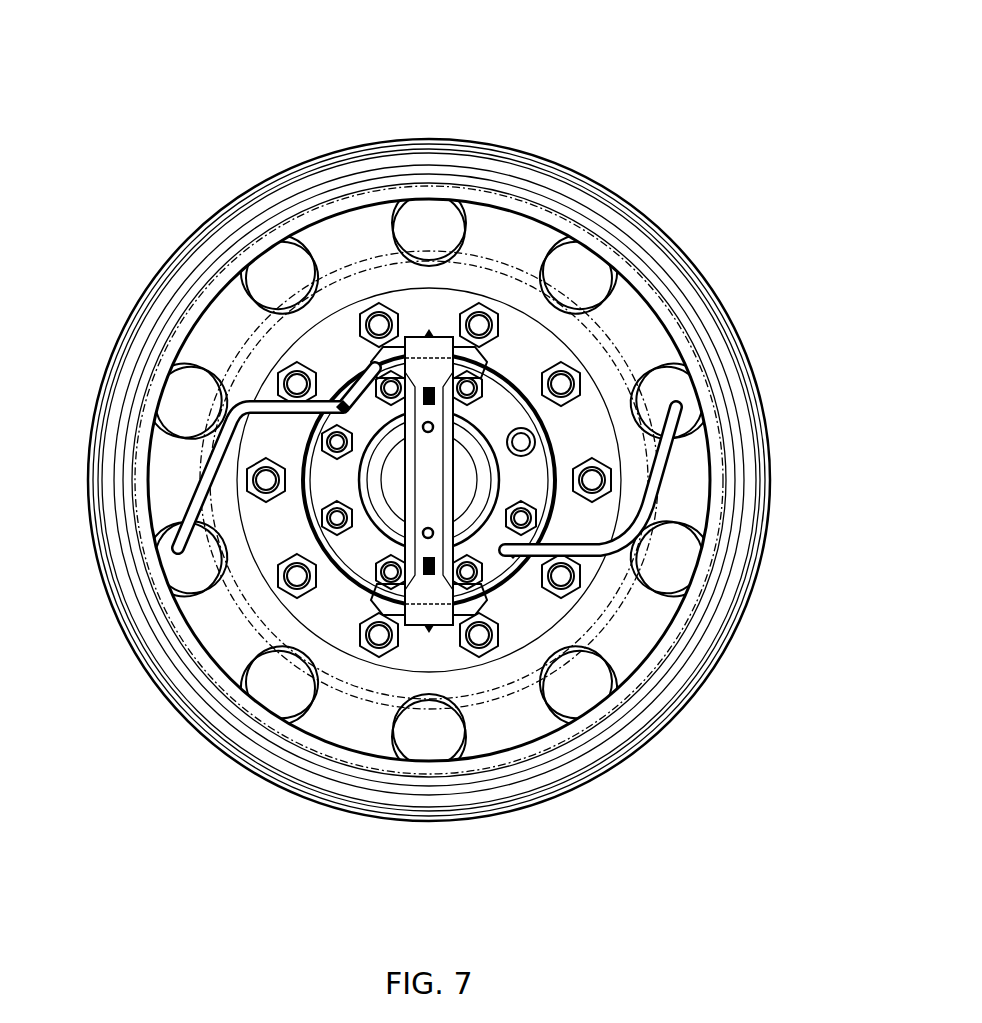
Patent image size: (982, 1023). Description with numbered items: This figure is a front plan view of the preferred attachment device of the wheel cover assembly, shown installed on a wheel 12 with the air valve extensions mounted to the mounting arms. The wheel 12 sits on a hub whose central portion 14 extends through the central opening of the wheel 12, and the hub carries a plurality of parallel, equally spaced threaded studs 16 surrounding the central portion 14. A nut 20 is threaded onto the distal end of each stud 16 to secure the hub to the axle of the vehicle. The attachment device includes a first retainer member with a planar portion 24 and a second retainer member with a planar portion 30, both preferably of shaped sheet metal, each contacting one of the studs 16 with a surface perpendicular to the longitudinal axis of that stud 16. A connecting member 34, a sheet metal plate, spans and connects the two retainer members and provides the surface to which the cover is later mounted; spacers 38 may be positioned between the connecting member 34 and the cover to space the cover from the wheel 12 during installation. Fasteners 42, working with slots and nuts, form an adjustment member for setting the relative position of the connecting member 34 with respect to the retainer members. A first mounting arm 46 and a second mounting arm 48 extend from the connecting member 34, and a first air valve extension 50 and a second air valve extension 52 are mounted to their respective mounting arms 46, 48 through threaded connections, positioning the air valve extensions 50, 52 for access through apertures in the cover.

The wheel 12 is at (572, 167).
The central portion of the hub 14 is at (467, 477).
The threaded stud 16 is at (522, 443).
The nut 20 is at (470, 343).
The planar portion 24 is at (477, 357).
The planar portion 30 is at (393, 598).
The connecting member 34 is at (437, 472).
The spacer 38 is at (428, 387).
The fastener 42 is at (429, 336).
The first mounting arm 46 is at (370, 340).
The second mounting arm 48 is at (502, 580).
The first air valve extension 50 is at (237, 395).
The second air valve extension 52 is at (657, 480).